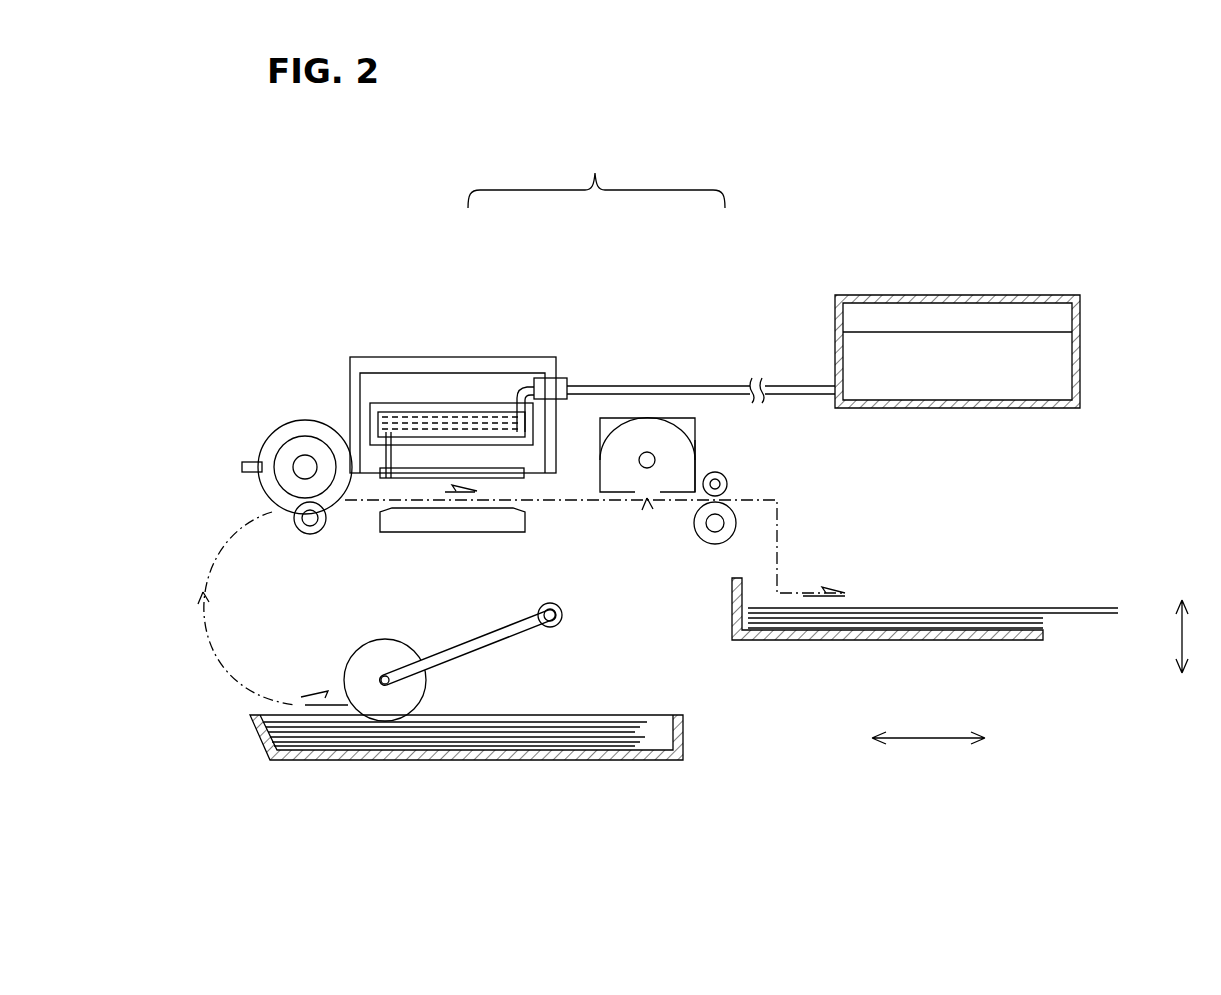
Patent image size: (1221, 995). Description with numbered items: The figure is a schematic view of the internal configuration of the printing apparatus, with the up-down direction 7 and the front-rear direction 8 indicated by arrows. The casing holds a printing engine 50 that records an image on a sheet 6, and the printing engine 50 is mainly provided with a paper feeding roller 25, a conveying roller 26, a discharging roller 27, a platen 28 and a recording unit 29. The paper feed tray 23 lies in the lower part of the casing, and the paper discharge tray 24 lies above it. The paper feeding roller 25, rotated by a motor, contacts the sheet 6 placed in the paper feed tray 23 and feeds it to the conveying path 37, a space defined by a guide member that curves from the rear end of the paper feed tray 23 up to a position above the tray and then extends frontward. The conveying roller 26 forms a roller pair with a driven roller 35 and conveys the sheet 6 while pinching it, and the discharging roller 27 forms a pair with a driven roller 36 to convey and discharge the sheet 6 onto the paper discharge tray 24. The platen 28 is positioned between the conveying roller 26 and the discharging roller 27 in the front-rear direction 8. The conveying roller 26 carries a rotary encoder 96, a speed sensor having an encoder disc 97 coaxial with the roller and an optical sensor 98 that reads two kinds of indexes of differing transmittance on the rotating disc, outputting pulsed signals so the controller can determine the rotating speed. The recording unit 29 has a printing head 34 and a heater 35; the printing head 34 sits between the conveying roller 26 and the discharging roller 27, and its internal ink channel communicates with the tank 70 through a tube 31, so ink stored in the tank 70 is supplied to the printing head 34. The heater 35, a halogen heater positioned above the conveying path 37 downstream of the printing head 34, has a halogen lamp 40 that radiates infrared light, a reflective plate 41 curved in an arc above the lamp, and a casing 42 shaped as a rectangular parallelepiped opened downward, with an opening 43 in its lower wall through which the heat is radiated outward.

The sheet 6 is at (553, 722).
The up-down direction 7 is at (1184, 636).
The front-rear direction 8 is at (930, 736).
The paper feed tray 23 is at (633, 715).
The paper discharge tray 24 is at (893, 641).
The paper feeding roller 25 is at (388, 640).
The conveying roller 26 is at (305, 436).
The discharging roller 27 is at (715, 544).
The platen 28 is at (453, 532).
The recording unit 29 is at (596, 175).
The tube 31 is at (583, 385).
The printing head 34 is at (519, 329).
The driven roller / heater 35 is at (313, 535).
The driven roller 36 is at (726, 477).
The conveying path 37 is at (248, 532).
The halogen lamp 40 is at (647, 452).
The reflective plate 41 is at (606, 425).
The casing 42 is at (696, 455).
The opening 43 is at (647, 498).
The printing engine 50 is at (286, 338).
The tank 70 is at (1080, 367).
The rotary encoder 96 is at (231, 421).
The encoder disc 97 is at (275, 432).
The optical sensor 98 is at (242, 467).